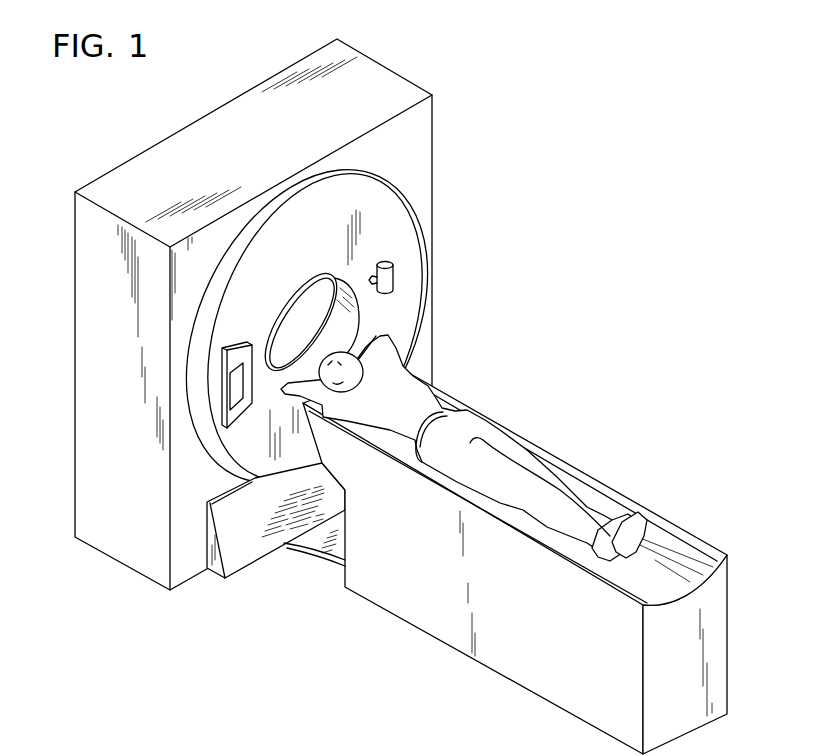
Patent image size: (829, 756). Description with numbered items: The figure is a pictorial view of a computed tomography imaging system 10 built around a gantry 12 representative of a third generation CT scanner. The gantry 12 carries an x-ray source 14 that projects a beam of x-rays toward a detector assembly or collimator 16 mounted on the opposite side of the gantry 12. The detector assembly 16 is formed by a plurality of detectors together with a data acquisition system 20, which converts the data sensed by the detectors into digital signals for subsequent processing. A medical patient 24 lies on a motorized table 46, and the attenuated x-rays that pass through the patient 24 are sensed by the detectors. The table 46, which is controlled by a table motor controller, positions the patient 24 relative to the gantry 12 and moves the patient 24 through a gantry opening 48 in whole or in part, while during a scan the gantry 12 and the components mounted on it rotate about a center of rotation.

The computed tomography (CT) imaging system 10 is at (562, 281).
The gantry 12 is at (405, 241).
The x-ray source 14 is at (393, 278).
The detector assembly or collimator 16 is at (243, 408).
The data acquisition system (DAS) 20 is at (235, 352).
The medical patient 24 is at (432, 400).
The motorized table 46 is at (553, 690).
The gantry opening 48 is at (305, 323).